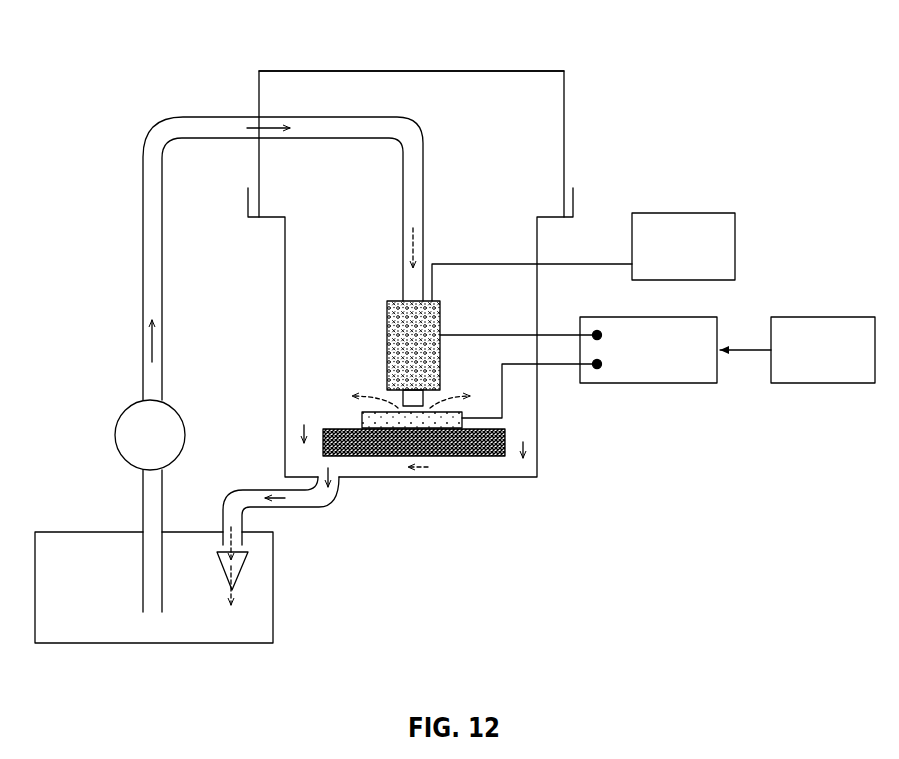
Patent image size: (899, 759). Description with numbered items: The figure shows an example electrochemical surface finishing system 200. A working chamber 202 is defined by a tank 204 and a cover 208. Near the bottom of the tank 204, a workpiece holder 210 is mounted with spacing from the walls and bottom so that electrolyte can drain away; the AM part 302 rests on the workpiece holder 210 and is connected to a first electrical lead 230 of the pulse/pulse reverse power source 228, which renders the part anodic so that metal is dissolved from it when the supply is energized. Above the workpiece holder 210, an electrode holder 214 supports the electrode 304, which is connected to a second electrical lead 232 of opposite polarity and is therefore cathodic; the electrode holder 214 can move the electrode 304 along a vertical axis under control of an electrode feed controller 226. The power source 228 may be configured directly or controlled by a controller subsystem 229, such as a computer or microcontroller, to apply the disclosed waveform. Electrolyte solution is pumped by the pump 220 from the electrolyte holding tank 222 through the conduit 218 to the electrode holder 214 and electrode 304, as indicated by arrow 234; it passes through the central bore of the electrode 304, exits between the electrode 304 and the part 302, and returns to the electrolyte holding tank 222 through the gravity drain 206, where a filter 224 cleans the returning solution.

The deposition system 200 is at (620, 60).
The working chamber 202 is at (411, 144).
The tank 204 is at (285, 310).
The gravity drain 206 is at (333, 498).
The cover 208 is at (258, 70).
The workpiece holder 210 is at (498, 455).
The electrode holder 214 is at (387, 302).
The conduit 218 is at (143, 187).
The pump 220 is at (116, 428).
The electrolyte holding tank 222 is at (154, 587).
The filter 224 is at (240, 573).
The electrode feed controller 226 is at (583, 257).
The power source 228 is at (648, 350).
The controller subsystem 229 is at (797, 350).
The first electrical lead 230 is at (503, 392).
The second electrical lead 232 is at (457, 333).
The arrow 234 is at (143, 338).
The AM part 302 is at (360, 412).
The electrode 304 is at (403, 400).